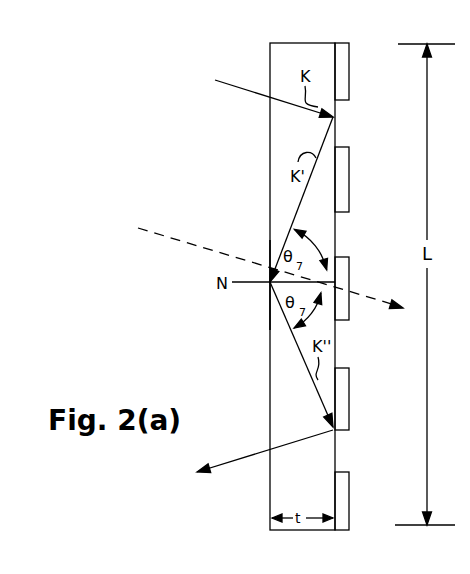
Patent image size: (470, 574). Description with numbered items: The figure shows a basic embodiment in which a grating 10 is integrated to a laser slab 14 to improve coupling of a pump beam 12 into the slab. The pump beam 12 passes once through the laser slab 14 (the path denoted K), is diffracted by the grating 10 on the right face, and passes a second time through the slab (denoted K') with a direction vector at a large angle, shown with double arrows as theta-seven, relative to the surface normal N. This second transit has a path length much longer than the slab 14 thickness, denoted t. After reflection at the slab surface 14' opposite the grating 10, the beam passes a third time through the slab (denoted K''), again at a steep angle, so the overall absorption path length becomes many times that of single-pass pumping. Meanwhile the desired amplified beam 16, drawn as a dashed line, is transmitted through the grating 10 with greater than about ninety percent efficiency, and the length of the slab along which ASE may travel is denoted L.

The grating 10 is at (345, 62).
The pump beam 12 is at (238, 80).
The laser slab 14 is at (252, 306).
The slab surface 14' is at (247, 303).
The amplified beam 16 is at (195, 250).